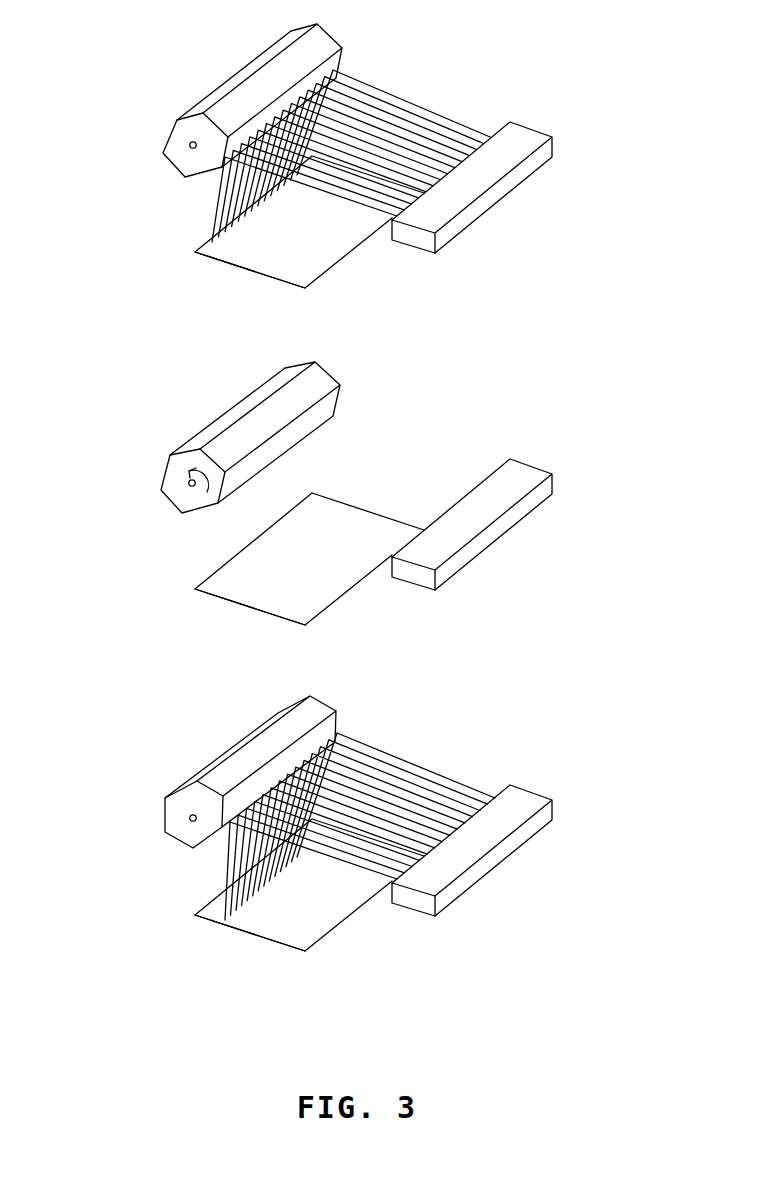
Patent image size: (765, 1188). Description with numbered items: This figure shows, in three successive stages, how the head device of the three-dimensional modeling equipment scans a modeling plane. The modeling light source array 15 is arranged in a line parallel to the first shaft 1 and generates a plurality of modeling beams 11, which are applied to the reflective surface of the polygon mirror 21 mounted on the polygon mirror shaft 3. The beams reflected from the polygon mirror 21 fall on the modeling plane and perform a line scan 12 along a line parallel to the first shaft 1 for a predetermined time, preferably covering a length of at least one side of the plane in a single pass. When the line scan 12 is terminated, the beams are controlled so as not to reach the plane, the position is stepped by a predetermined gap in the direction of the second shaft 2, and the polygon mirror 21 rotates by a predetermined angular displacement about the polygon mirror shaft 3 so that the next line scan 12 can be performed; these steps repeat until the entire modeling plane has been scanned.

The first shaft 1 is at (305, 288).
The second shaft 2 is at (305, 288).
The polygon mirror shaft 3 is at (190, 148).
The modeling beams 11 is at (427, 767).
The line scan 12 is at (218, 910).
The modeling light source array 15 is at (552, 147).
The polygon mirror 21 is at (183, 128).